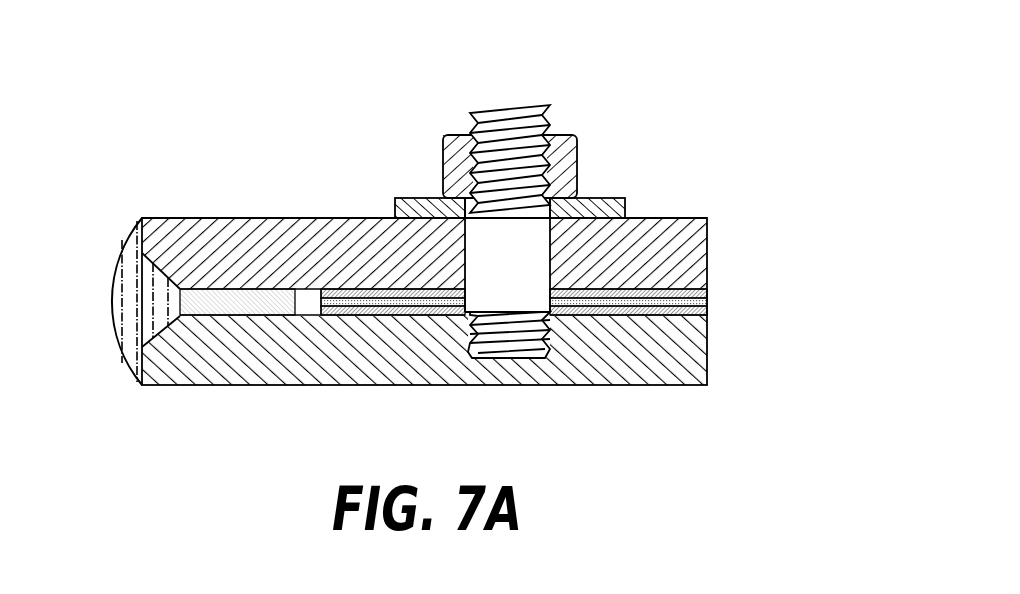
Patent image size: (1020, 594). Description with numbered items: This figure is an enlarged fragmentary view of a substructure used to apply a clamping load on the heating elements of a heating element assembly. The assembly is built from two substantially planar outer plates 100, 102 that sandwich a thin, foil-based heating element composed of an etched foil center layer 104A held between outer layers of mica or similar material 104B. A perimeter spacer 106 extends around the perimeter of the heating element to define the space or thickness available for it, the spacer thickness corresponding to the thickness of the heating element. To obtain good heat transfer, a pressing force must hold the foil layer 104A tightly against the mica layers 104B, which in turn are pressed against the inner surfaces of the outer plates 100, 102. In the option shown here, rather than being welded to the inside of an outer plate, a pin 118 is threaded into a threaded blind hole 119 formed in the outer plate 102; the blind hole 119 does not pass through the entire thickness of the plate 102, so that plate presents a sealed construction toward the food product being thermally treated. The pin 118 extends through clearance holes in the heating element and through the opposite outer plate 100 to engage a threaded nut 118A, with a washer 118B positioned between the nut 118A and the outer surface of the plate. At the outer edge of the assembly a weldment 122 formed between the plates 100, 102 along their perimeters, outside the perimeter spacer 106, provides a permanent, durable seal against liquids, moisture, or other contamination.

The outer plate 100 is at (310, 218).
The outer plate 102 is at (707, 352).
The etched foil center layer 104A is at (707, 300).
The outer mica layer 104B is at (707, 292).
The perimeter spacer 106 is at (230, 297).
The pin 118 is at (549, 107).
The threaded nut 118A is at (578, 157).
The washer 118B is at (625, 205).
The threaded blind hole 119 is at (550, 344).
The weldment 122 is at (129, 232).